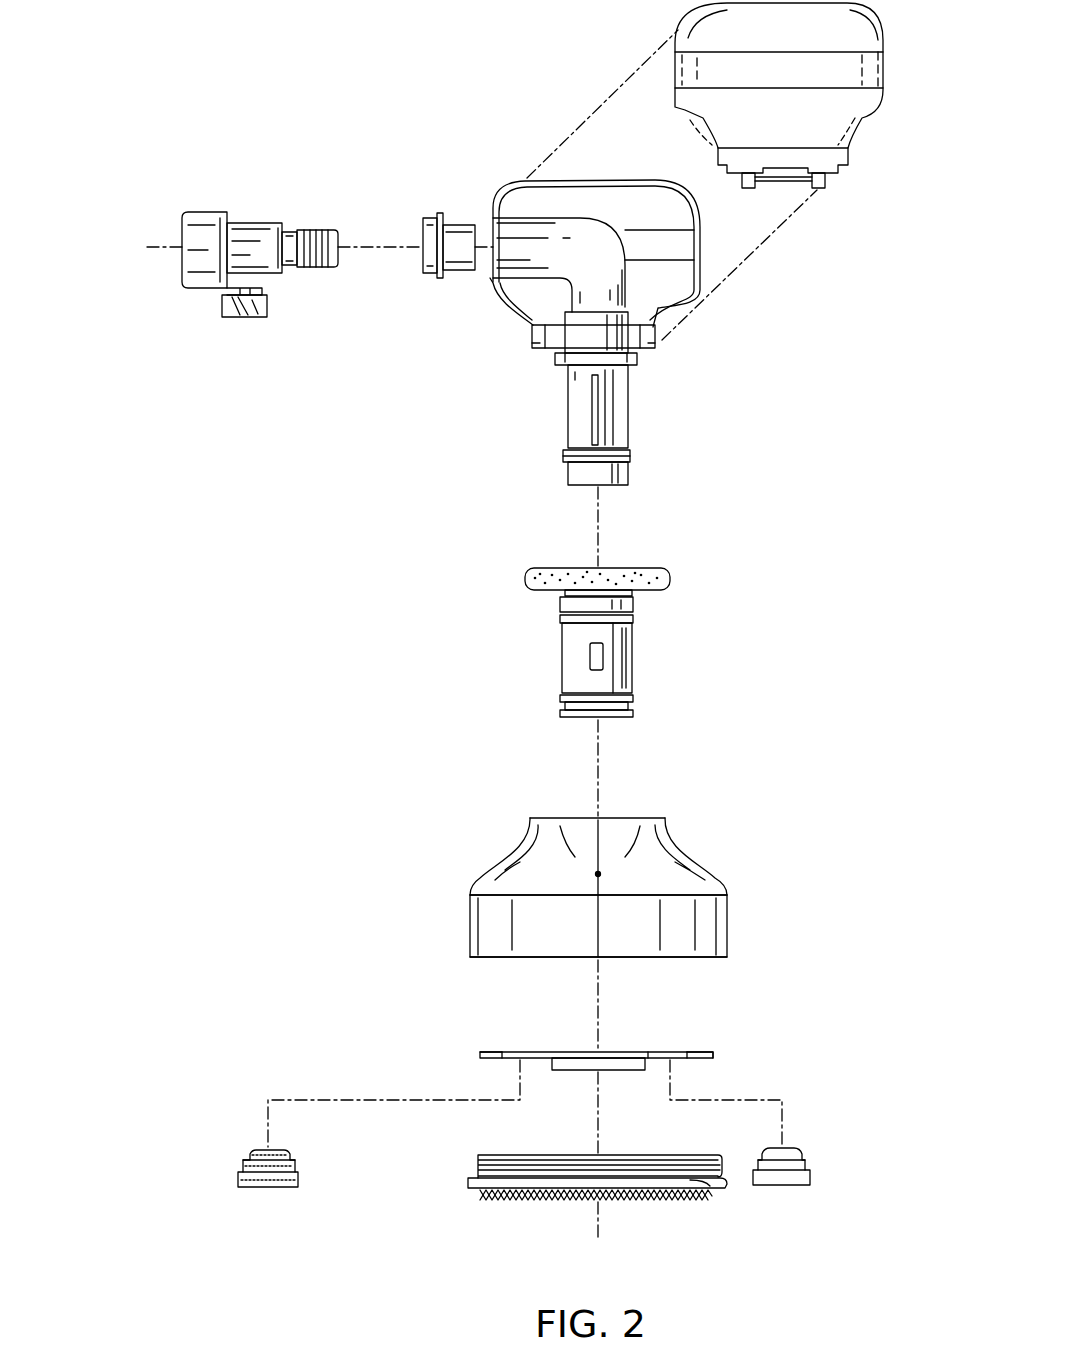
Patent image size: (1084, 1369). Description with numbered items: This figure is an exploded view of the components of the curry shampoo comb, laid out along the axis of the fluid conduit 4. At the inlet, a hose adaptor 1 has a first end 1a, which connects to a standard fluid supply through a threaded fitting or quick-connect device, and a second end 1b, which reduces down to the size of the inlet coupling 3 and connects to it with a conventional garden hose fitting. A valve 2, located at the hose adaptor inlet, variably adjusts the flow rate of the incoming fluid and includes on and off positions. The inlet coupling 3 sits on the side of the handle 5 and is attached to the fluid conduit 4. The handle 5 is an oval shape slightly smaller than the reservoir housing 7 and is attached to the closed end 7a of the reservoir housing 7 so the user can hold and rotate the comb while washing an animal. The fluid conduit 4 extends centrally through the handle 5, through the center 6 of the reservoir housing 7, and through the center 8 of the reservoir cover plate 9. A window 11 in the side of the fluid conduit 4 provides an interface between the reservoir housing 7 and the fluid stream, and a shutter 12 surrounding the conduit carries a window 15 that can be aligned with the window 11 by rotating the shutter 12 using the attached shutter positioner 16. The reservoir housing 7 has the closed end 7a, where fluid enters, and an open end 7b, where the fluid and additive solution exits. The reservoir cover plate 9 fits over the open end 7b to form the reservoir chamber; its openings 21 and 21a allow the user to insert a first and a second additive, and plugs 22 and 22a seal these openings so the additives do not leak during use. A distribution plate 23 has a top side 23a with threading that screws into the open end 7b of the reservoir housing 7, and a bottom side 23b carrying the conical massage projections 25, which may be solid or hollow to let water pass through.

The hose adaptor 1 is at (241, 266).
The first end of hose adaptor 1a is at (182, 223).
The second end of hose adaptor 1b is at (338, 255).
The valve 2 is at (238, 317).
The inlet coupling 3 is at (448, 270).
The fluid conduit 4 is at (591, 398).
The handle 5 is at (700, 240).
The center of reservoir housing 6 is at (598, 874).
The reservoir housing 7 is at (619, 874).
The closed end of reservoir housing 7a is at (565, 817).
The open end of reservoir housing 7b is at (550, 957).
The center of reservoir cover plate 8 is at (598, 1052).
The reservoir cover plate 9 is at (713, 1053).
The window 11 is at (592, 408).
The shutter 12 is at (626, 653).
The window 15 is at (590, 663).
The shutter positioner 16 is at (670, 577).
The opening 21 is at (575, 1035).
The opening 21a is at (510, 1052).
The plug 22 is at (783, 1187).
The plug 22a is at (268, 1188).
The distribution plate 23 is at (551, 1193).
The top side of distribution plate 23a is at (482, 1153).
The bottom side of distribution plate 23b is at (480, 1192).
The massage projections 25 is at (678, 1198).